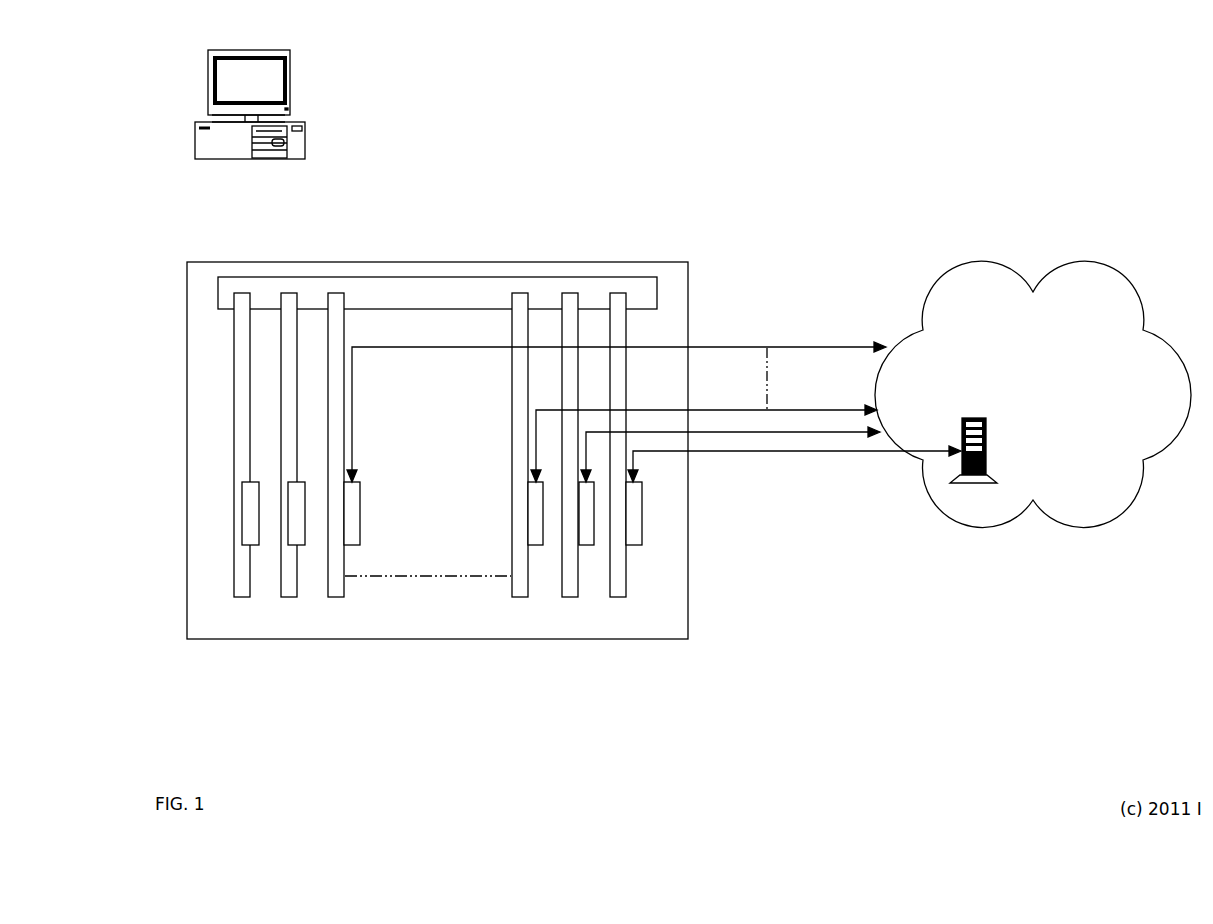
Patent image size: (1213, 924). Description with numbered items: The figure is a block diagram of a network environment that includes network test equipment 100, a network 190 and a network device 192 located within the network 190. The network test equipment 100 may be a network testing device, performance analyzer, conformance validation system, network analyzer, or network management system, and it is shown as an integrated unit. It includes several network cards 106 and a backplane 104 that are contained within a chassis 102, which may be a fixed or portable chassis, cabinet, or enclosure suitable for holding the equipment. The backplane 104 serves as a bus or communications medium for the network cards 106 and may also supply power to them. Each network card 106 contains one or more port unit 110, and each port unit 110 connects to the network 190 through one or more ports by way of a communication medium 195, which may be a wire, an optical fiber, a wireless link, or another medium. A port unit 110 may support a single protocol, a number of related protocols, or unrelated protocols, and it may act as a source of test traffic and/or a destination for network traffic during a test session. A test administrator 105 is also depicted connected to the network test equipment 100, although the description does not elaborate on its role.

The network test equipment 100 is at (630, 70).
The chassis 102 is at (553, 262).
The backplane 104 is at (613, 277).
The test administrator 105 is at (438, 252).
The network cards 106 is at (638, 597).
The port unit 110 is at (642, 545).
The network 190 is at (1033, 421).
The network devices 192 is at (985, 451).
The communication medium 195 is at (750, 452).